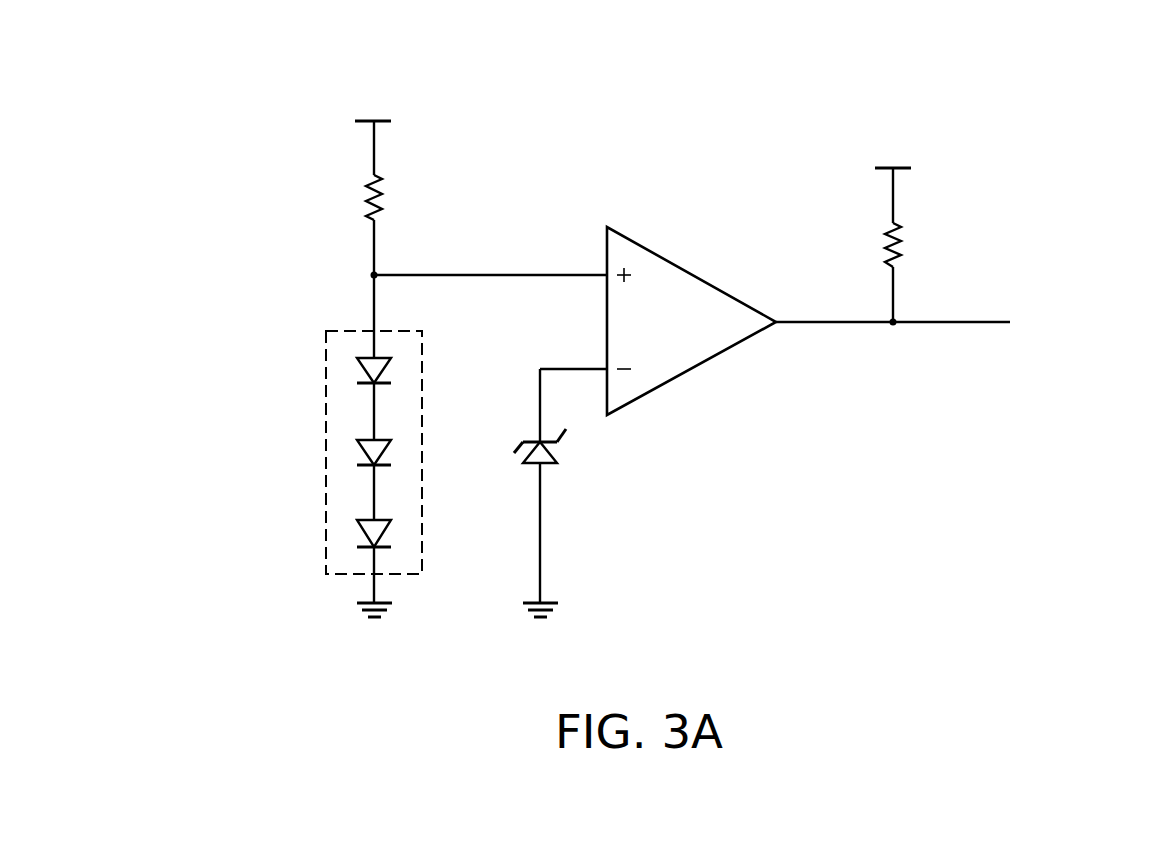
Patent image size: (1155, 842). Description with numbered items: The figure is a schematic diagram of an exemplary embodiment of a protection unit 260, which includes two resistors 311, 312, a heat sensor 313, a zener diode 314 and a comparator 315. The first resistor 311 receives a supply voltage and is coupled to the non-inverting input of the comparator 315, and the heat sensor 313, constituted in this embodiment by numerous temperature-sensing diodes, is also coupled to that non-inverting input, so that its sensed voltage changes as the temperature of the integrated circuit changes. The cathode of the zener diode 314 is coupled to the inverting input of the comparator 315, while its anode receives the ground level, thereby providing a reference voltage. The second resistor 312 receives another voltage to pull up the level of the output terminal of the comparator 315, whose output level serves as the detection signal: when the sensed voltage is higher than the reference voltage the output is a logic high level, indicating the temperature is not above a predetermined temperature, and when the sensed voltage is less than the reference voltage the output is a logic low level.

The protection unit 260 is at (1066, 131).
The resistor 311 is at (366, 199).
The resistor 312 is at (885, 247).
The heat sensor 313 is at (326, 455).
The zener diode 314 is at (555, 452).
The comparator 315 is at (694, 272).